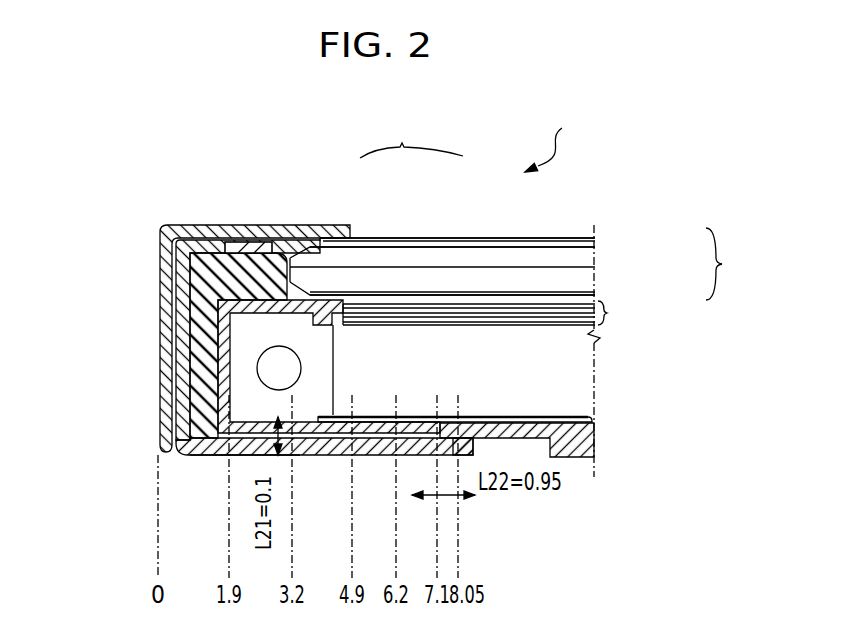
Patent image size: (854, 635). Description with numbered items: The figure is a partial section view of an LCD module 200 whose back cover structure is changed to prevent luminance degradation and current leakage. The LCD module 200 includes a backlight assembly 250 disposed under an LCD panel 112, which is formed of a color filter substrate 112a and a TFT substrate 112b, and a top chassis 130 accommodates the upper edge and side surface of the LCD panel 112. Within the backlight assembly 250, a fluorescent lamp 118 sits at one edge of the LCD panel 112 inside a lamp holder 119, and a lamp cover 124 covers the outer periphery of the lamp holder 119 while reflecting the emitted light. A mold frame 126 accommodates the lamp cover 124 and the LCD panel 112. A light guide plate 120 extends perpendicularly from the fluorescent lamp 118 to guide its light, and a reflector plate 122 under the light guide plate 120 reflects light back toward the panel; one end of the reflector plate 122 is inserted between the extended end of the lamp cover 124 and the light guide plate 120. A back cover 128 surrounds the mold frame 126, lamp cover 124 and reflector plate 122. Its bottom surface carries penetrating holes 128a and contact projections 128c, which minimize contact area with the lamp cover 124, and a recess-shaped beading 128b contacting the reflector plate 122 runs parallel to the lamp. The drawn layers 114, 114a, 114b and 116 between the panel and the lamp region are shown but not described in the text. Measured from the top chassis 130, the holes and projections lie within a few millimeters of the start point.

The LCD module 200 is at (569, 137).
The top chassis 130 is at (166, 246).
The back cover 128 is at (180, 287).
The penetrating hole 128a is at (253, 450).
The recess-shaped beading 128b is at (533, 440).
The contact projection 128c is at (327, 455).
The mold frame 126 is at (200, 326).
The lamp cover 124 is at (225, 412).
The reflector plate 122 is at (583, 408).
The light guide plate 120 is at (580, 377).
The lamp holder 119 is at (258, 333).
The fluorescent lamp 118 is at (257, 372).
The optical filter laminate 116 is at (490, 315).
The lens unit 114 is at (457, 176).
The first lens 114a is at (387, 240).
The second lens 114b is at (437, 298).
The LCD panel 112 is at (536, 264).
The color filter substrate 112a is at (597, 257).
The TFT substrate 112b is at (597, 287).
The backlight assembly 250 is at (512, 338).